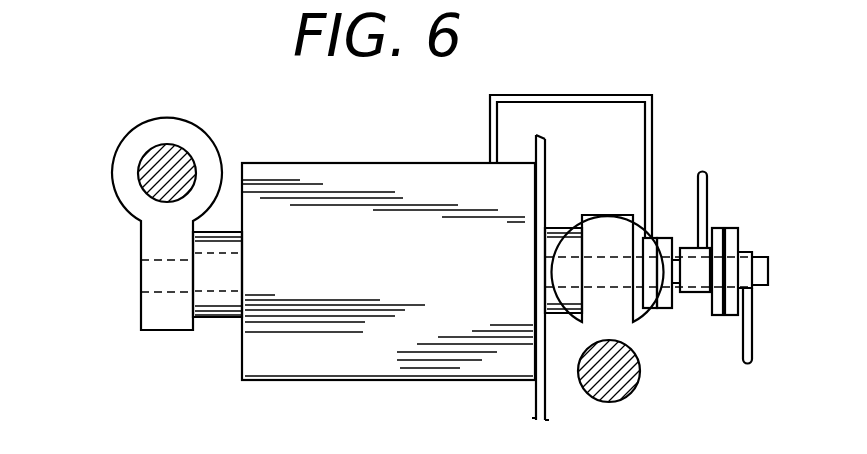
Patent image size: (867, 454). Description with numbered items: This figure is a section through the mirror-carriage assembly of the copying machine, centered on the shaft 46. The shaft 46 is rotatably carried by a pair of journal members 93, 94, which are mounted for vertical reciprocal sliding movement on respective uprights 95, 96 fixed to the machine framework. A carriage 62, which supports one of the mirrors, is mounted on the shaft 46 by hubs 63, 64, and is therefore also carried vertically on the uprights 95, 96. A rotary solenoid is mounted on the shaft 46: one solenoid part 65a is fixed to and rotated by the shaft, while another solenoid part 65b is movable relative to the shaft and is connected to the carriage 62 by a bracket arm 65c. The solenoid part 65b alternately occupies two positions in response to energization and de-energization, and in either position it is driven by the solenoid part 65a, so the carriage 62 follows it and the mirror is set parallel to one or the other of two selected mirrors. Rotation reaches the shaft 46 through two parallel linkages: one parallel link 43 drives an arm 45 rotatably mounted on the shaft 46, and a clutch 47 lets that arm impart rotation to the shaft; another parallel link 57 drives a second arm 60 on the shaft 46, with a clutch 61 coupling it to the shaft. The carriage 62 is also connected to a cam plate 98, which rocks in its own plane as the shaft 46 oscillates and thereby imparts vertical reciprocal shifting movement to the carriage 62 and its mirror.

The parallel link 43 is at (708, 190).
The arm 45 is at (717, 228).
The shaft 46 is at (697, 293).
The clutch 47 is at (702, 296).
The parallel link 57 is at (753, 352).
The arm 60 is at (735, 240).
The clutch 61 is at (752, 252).
The carriage 62 is at (386, 281).
The hub 63 is at (556, 228).
The hub 64 is at (218, 318).
The solenoid part 65a is at (665, 238).
The solenoid part 65b is at (642, 238).
The bracket arm 65c is at (568, 99).
The journal member 93 is at (148, 238).
The journal member 94 is at (592, 215).
The upright 95 is at (158, 160).
The upright 96 is at (617, 380).
The cam plate 98 is at (535, 397).